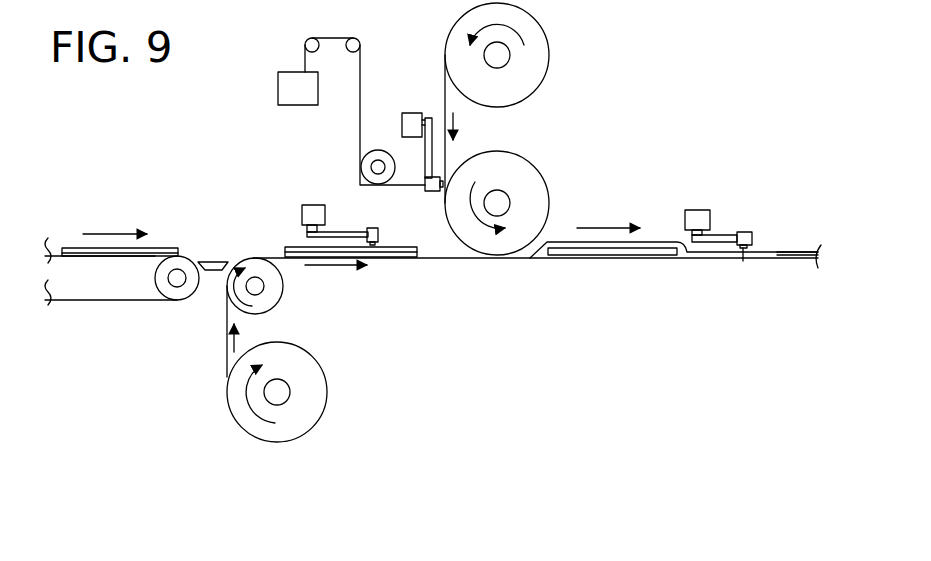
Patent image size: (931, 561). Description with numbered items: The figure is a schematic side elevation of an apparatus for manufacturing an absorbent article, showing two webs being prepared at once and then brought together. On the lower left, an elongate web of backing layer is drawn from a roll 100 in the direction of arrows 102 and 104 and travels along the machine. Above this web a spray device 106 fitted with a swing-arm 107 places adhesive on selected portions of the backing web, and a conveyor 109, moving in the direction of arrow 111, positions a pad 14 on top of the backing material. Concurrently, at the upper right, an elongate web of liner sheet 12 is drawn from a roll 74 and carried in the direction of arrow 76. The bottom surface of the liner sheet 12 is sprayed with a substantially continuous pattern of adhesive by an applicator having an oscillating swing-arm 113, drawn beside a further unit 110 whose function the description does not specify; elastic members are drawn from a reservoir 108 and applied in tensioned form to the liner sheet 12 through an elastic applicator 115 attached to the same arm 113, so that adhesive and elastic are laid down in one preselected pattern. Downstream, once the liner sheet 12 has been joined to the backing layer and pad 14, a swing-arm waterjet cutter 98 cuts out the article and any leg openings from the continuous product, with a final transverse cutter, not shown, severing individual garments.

The liner sheet 12 is at (443, 77).
The pad 14 is at (163, 248).
The roll 74 is at (547, 57).
The arrow 76 is at (455, 125).
The swing-arm waterjet cutter 98 is at (720, 232).
The roll 100 is at (322, 410).
The arrow 102 is at (235, 338).
The arrow 104 is at (343, 267).
The spray device 106 is at (305, 203).
The swing-arm 107 is at (347, 232).
The reservoir 108 is at (290, 72).
The conveyor 109 is at (175, 293).
The sensor 110 is at (408, 112).
The arrow 111 is at (118, 232).
The swing-arm 113 is at (425, 161).
The elastic applicator 115 is at (433, 192).